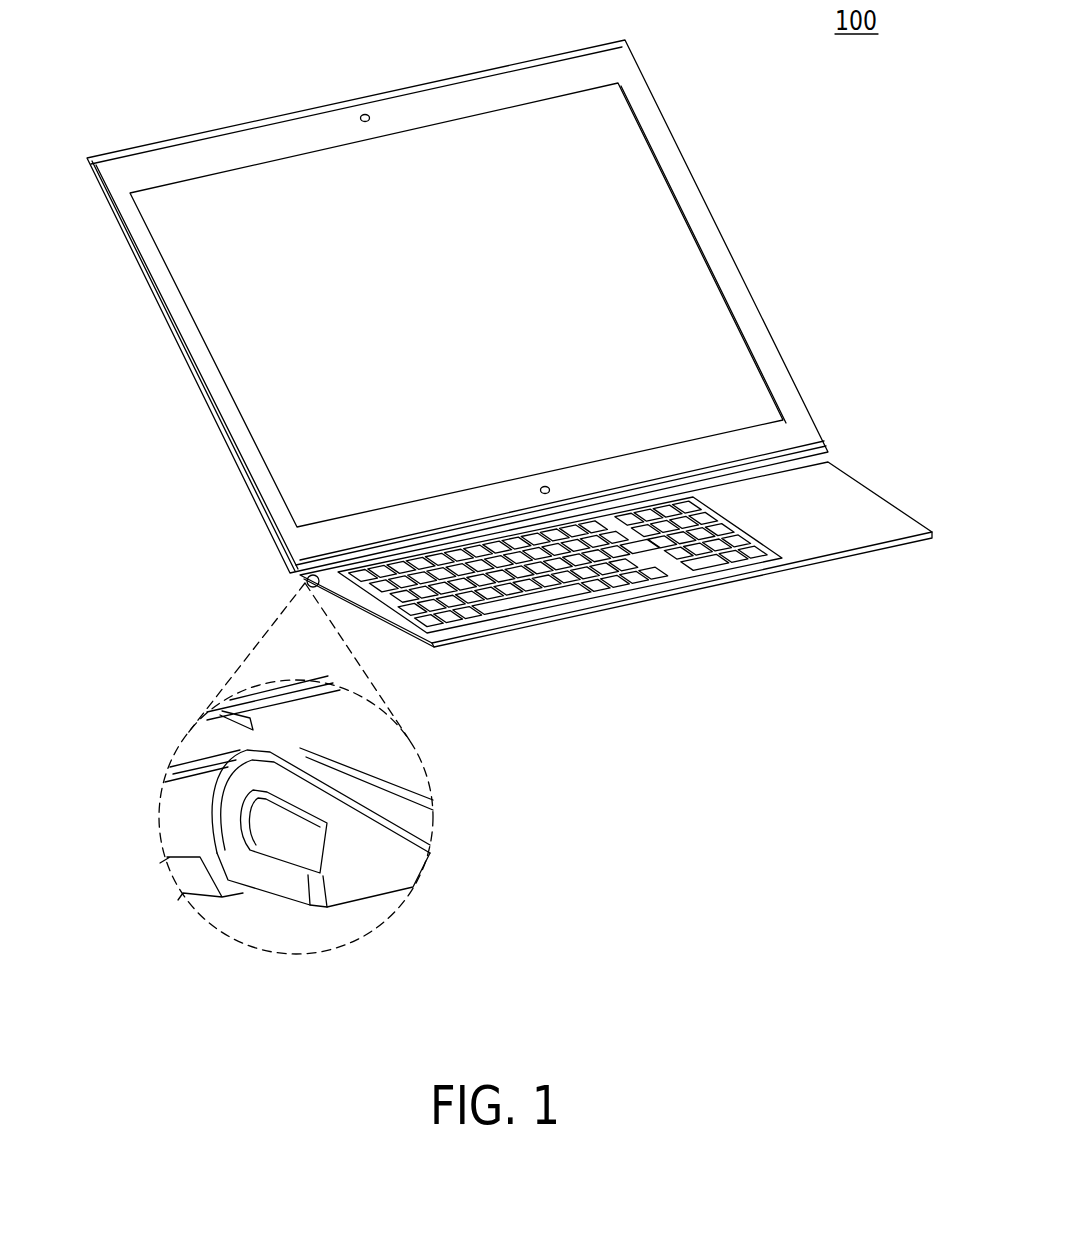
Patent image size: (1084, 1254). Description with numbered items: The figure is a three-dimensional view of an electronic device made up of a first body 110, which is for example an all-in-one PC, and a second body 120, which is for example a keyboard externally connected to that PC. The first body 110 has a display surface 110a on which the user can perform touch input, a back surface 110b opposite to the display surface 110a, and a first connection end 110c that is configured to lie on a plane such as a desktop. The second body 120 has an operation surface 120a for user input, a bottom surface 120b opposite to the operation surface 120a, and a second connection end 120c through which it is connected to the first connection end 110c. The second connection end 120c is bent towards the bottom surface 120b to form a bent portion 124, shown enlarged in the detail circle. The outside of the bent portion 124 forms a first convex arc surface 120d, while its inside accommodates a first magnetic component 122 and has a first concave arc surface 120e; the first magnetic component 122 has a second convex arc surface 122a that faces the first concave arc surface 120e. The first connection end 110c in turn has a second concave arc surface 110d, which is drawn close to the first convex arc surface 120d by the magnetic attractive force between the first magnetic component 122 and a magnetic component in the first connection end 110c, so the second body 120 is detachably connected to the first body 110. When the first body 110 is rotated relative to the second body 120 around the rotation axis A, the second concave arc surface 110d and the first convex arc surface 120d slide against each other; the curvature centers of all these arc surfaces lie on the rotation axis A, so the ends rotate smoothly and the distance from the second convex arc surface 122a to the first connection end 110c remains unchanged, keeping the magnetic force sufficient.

The first body 110 is at (706, 232).
The display surface 110a is at (476, 192).
The back surface 110b is at (146, 348).
The first connection end 110c is at (849, 451).
The second concave arc surface 110d is at (226, 843).
The second body 120 is at (878, 526).
The operation surface 120a is at (796, 519).
The bottom surface 120b is at (797, 578).
The second connection end 120c is at (827, 462).
The first convex arc surface 120d is at (223, 788).
The first concave arc surface 120e is at (257, 803).
The first magnetic component 122 is at (343, 860).
The second convex arc surface 122a is at (240, 755).
The bent portion 124 is at (270, 784).
The rotation axis A is at (258, 823).